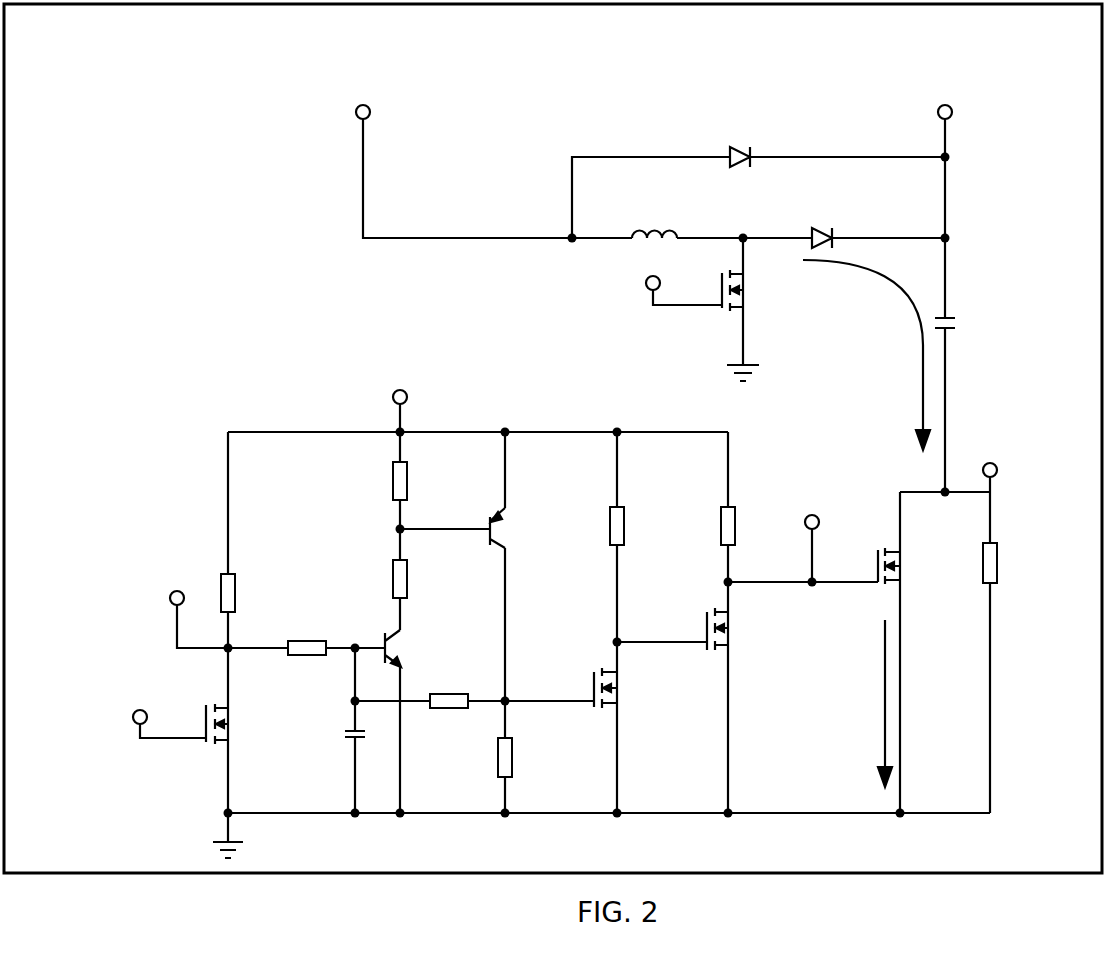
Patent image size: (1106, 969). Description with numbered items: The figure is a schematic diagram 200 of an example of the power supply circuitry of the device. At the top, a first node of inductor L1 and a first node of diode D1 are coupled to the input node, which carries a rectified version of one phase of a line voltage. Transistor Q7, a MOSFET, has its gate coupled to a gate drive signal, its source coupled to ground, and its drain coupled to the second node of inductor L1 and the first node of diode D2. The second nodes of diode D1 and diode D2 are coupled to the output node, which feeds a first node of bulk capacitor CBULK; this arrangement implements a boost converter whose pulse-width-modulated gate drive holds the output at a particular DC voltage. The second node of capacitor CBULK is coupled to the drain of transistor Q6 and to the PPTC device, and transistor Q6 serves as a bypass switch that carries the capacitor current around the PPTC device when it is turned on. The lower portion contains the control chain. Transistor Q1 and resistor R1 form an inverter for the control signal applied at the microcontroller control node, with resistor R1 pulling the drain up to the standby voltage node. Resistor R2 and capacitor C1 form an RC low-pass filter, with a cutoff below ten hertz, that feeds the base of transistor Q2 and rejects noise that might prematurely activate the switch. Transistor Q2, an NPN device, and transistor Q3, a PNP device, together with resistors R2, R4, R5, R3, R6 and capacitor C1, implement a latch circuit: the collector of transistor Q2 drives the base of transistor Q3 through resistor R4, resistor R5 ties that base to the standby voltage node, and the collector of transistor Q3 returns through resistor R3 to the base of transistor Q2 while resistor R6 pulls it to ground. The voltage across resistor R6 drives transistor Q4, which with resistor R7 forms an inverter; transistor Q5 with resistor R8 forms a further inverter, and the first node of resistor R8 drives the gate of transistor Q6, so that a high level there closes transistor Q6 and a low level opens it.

The schematic diagram 200 is at (574, 36).
The transistor Q1 is at (238, 724).
The transistor Q2 is at (413, 648).
The transistor Q3 is at (518, 528).
The transistor Q4 is at (627, 688).
The transistor Q5 is at (738, 629).
The transistor Q6 is at (910, 566).
The transistor Q7 is at (754, 290).
The resistor R1 is at (248, 593).
The resistor R2 is at (307, 630).
The resistor R3 is at (449, 720).
The resistor R4 is at (420, 579).
The resistor R5 is at (420, 481).
The resistor R6 is at (524, 757).
The resistor R7 is at (636, 526).
The resistor R8 is at (747, 526).
The capacitor C1 is at (341, 737).
The bulk capacitor CBULK is at (974, 325).
The inductor L1 is at (654, 222).
The diode D1 is at (740, 141).
The diode D2 is at (823, 226).
The PPTC device PPTC is at (1024, 563).